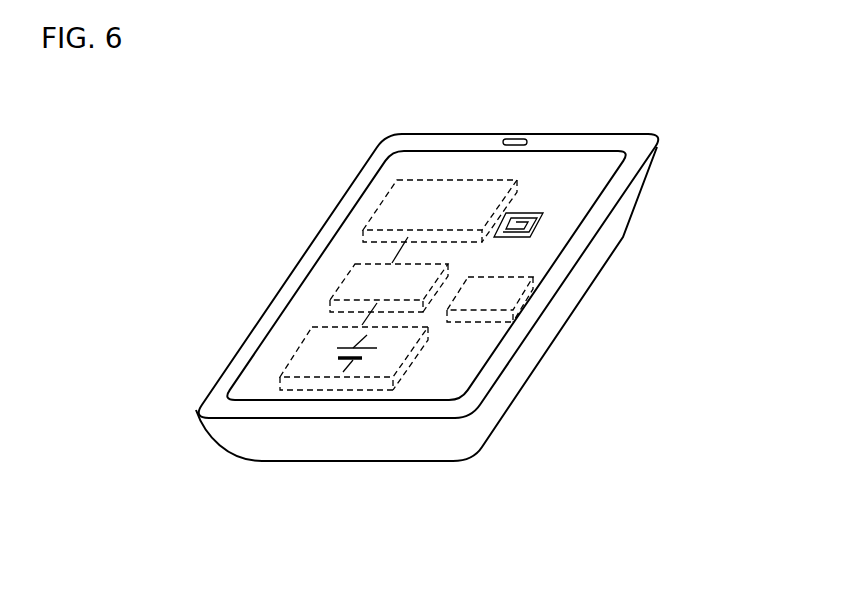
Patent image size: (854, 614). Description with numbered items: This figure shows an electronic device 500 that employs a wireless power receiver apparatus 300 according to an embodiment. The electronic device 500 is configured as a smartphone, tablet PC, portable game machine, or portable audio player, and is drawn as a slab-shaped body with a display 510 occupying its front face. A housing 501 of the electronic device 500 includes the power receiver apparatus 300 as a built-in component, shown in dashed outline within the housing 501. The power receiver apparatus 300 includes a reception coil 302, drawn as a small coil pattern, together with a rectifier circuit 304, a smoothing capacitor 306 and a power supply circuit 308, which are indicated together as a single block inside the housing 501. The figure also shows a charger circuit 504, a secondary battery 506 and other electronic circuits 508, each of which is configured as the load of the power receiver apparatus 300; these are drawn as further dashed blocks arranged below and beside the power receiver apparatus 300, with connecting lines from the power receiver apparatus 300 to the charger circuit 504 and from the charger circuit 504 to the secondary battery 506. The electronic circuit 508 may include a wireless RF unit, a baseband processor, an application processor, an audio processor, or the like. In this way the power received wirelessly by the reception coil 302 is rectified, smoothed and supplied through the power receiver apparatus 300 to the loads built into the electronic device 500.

The electronic device 500 is at (418, 592).
The housing 501 is at (490, 410).
The display 510 is at (585, 167).
The power receiver apparatus 300 is at (462, 203).
The reception coil 302 is at (545, 217).
The rectifier circuit 304 is at (344, 203).
The smoothing capacitor 306 is at (344, 203).
The power supply circuit 308 is at (400, 210).
The charger circuit 504 is at (360, 287).
The secondary battery 506 is at (298, 383).
The electronic circuit 508 is at (498, 298).